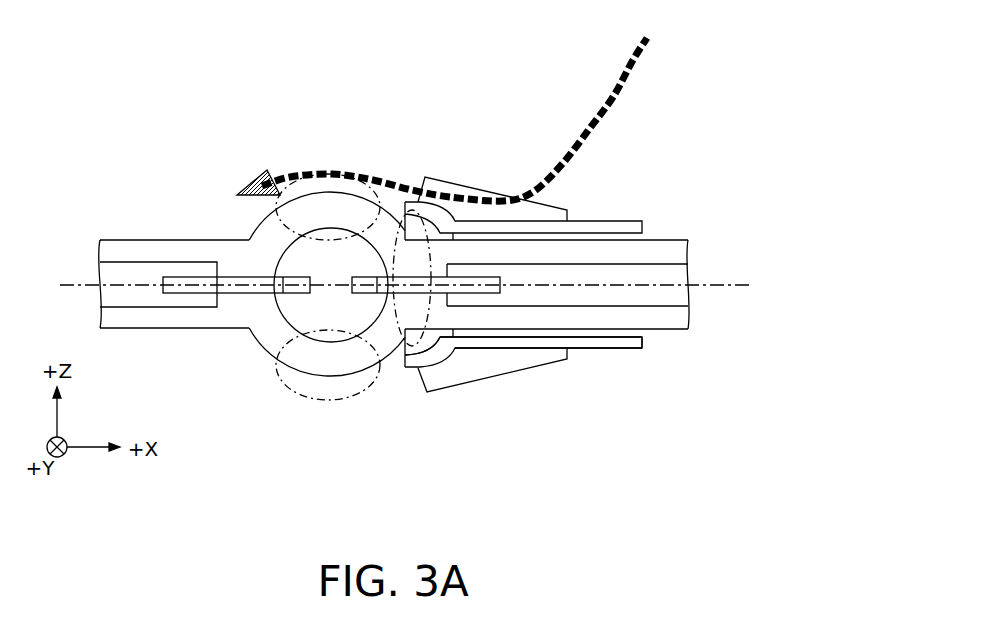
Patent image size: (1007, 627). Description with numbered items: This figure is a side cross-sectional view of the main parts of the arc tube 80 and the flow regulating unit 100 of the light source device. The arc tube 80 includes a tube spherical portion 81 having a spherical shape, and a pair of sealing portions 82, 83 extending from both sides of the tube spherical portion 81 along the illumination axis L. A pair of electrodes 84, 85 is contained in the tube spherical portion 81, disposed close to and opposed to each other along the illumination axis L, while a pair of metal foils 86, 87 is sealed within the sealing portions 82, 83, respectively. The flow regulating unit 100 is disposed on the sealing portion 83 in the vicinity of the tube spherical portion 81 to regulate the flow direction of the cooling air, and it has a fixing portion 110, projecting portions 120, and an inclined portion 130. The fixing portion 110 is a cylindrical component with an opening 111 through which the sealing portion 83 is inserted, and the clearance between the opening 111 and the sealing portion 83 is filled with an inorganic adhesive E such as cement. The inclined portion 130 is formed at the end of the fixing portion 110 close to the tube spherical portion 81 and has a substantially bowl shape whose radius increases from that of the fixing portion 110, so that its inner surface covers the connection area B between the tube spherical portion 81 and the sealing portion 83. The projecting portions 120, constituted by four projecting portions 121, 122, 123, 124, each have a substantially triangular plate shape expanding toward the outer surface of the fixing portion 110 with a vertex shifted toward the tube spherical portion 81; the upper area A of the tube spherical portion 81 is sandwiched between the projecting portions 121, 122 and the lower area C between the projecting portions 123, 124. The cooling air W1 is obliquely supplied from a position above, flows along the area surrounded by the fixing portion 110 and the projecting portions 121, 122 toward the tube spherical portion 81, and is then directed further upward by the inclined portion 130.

The arc tube 80 is at (299, 272).
The tube spherical portion 81 is at (258, 348).
The sealing portion 82 is at (203, 329).
The sealing portion 83 is at (655, 221).
The electrode 84 is at (289, 341).
The electrode 85 is at (378, 341).
The metal foil 86 is at (133, 308).
The metal foil 87 is at (675, 309).
The flow regulating unit 100 is at (578, 283).
The fixing portion 110 is at (583, 350).
The opening 111 is at (620, 349).
The projecting portions 120 is at (494, 283).
The projecting portion 121 is at (492, 173).
The projecting portion 122 is at (457, 182).
The projecting portion 123 is at (494, 393).
The projecting portion 124 is at (487, 377).
The inclined portion 130 is at (427, 393).
The upper area A is at (334, 170).
The connection area B is at (400, 200).
The lower area C is at (328, 402).
The inorganic adhesive E is at (645, 337).
The illumination axis L is at (712, 282).
The cooling air W1 is at (452, 103).